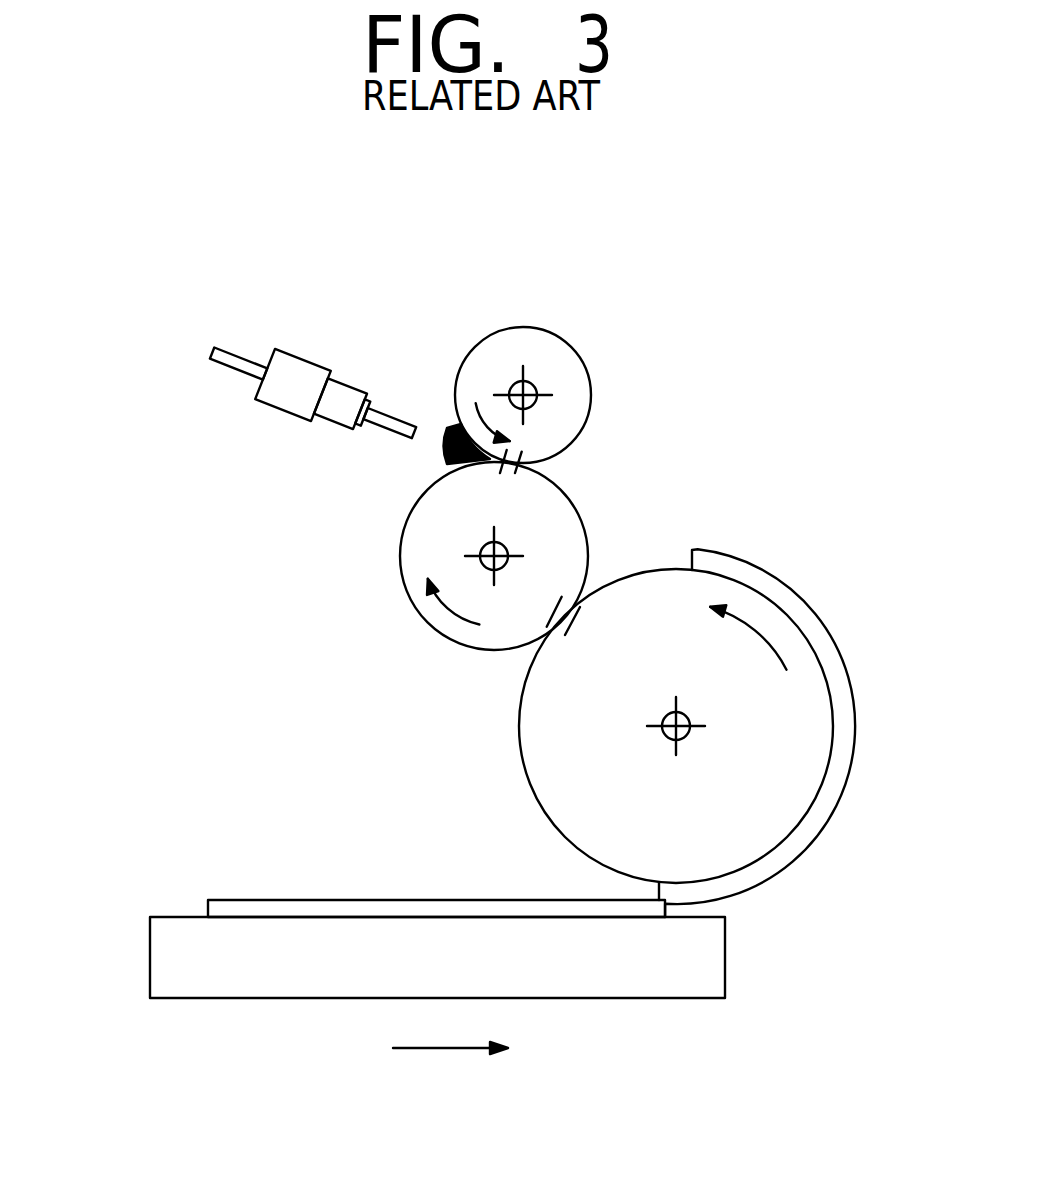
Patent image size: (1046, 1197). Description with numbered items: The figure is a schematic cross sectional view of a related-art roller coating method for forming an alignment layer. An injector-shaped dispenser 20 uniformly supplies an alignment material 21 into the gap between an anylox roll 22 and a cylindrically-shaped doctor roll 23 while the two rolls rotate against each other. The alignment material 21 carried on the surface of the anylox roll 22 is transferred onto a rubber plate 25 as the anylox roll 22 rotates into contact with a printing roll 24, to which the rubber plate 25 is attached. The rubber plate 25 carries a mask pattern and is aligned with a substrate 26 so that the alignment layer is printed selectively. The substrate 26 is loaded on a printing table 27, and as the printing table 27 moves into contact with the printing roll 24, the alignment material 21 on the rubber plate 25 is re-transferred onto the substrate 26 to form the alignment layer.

The dispenser 20 is at (288, 360).
The alignment material 21 is at (448, 433).
The anylox roll 22 is at (408, 583).
The doctor roll 23 is at (545, 343).
The printing roll 24 is at (540, 788).
The rubber plate 25 is at (848, 698).
The substrate 26 is at (207, 903).
The printing table 27 is at (155, 953).